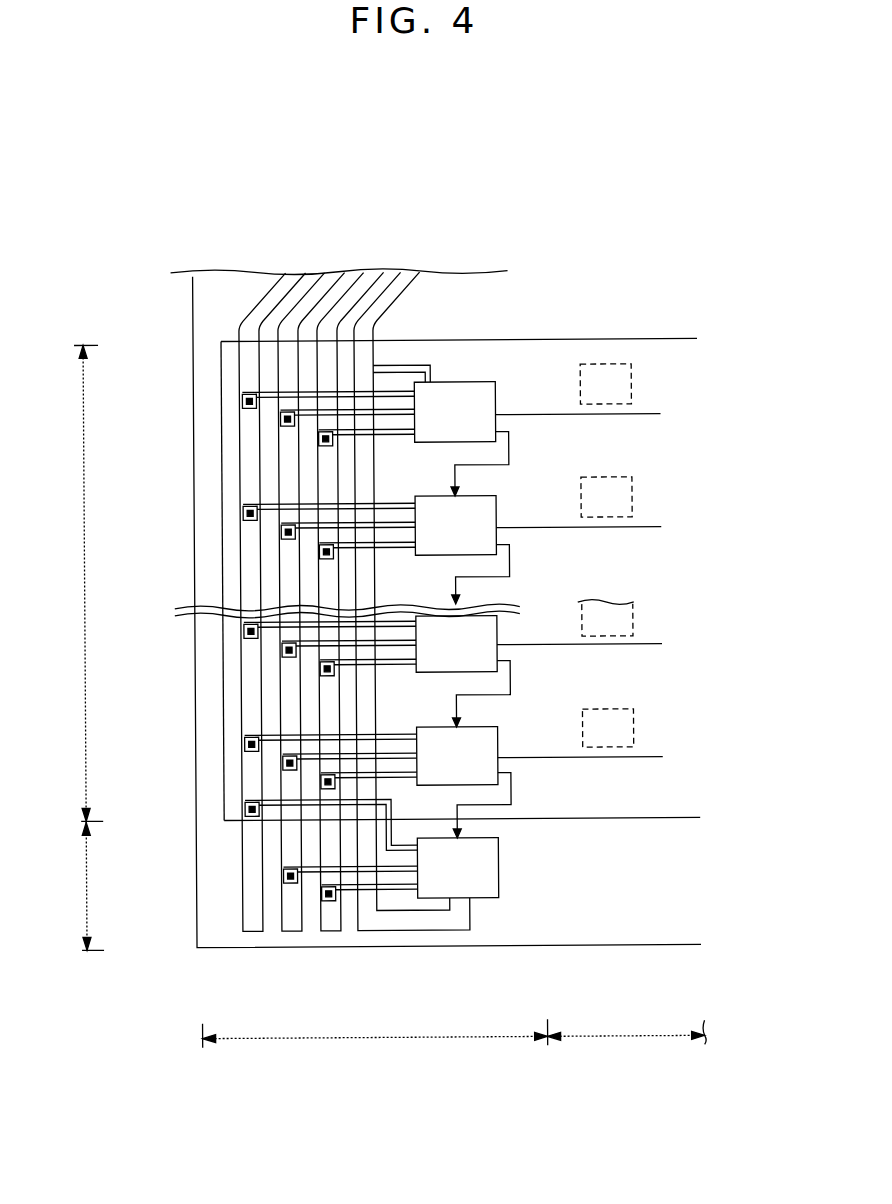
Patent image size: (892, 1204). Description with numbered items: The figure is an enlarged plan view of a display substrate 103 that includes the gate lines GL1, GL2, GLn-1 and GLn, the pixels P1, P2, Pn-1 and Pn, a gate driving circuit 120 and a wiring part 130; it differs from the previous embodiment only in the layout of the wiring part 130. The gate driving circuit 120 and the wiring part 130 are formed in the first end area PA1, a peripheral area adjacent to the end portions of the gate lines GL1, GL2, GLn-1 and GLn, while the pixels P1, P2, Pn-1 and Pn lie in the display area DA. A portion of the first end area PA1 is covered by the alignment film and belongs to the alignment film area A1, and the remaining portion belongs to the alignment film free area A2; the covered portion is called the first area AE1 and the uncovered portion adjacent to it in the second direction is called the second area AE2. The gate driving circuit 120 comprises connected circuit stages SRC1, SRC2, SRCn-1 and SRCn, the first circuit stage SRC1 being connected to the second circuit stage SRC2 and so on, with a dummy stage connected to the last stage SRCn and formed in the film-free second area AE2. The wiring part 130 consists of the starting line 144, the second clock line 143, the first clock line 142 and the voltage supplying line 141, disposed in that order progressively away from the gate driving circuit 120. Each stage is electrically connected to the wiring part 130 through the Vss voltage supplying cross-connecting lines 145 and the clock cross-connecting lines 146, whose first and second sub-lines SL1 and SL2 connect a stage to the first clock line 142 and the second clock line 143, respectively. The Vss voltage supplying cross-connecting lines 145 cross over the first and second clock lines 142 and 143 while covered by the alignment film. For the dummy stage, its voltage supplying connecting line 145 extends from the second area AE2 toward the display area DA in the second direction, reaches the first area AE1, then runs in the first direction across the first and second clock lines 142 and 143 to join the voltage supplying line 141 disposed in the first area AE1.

The display substrate 103 is at (447, 135).
The gate driving circuit 120 is at (489, 364).
The wiring part 130 is at (447, 216).
The voltage supplying line 141 is at (297, 273).
The first clock line 142 is at (336, 273).
The second clock line 143 is at (374, 273).
The starting line 144 is at (413, 273).
The Vss voltage supplying cross-connecting line 145 is at (262, 391).
The clock cross-connecting lines 146 is at (143, 411).
The first sub-line SL1 is at (297, 411).
The second sub-line SL2 is at (333, 432).
The first circuit stage SRC1 is at (461, 439).
The second circuit stage SRC2 is at (462, 550).
The (n-1)-th circuit stage SRCn-1 is at (463, 672).
The n-th circuit stage SRCn is at (464, 783).
The first gate line GL1 is at (596, 413).
The second gate line GL2 is at (597, 526).
The (n-1)-th gate line GLn-1 is at (607, 643).
The n-th gate line GLn is at (599, 756).
The first pixel P1 is at (605, 384).
The second pixel P2 is at (606, 497).
The (n-1)-th pixel Pn-1 is at (607, 620).
The n-th pixel Pn is at (607, 728).
The alignment film area A1 is at (641, 342).
The alignment film free area A2 is at (496, 291).
The first area AE1 is at (73, 583).
The second area AE2 is at (75, 885).
The first end area PA1 is at (375, 1041).
The display area DA is at (627, 1041).